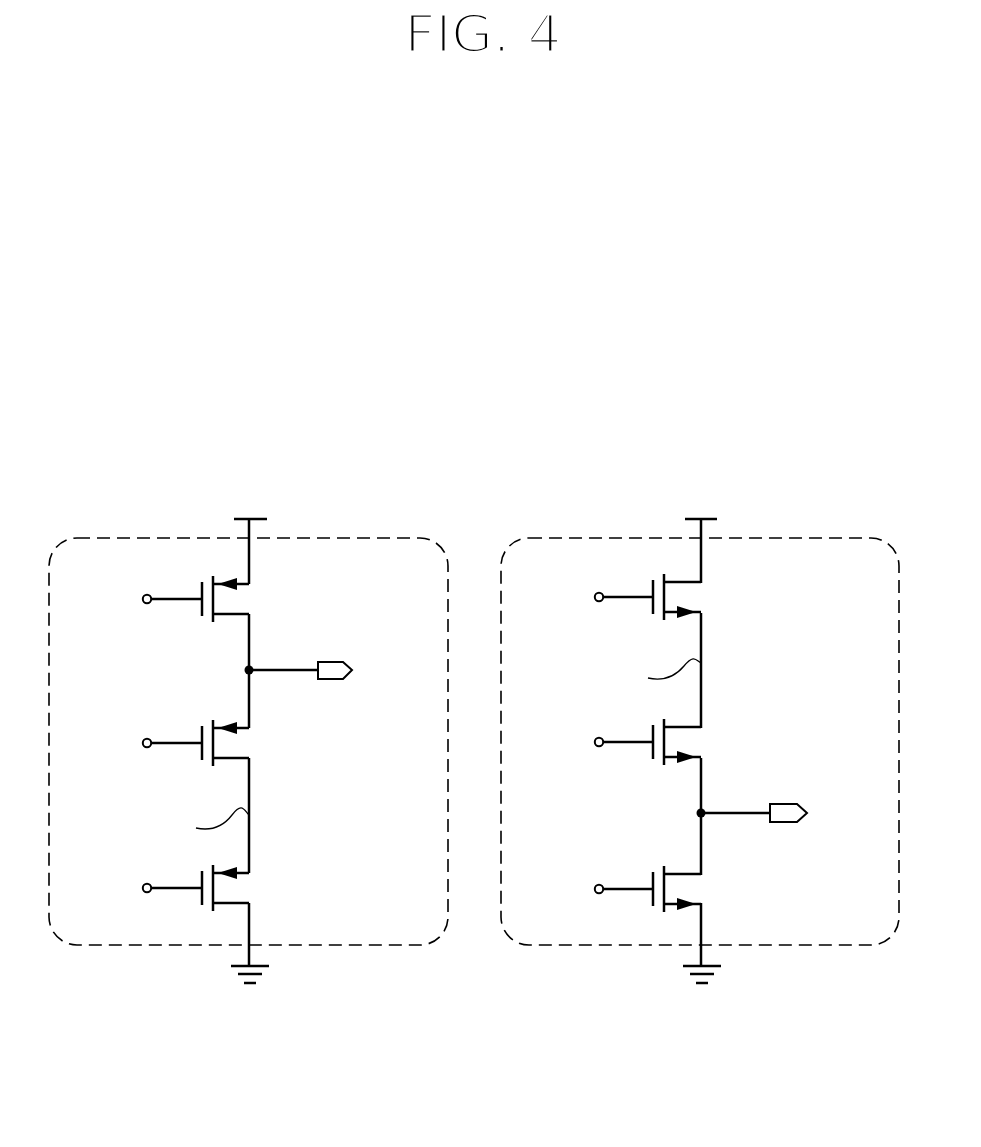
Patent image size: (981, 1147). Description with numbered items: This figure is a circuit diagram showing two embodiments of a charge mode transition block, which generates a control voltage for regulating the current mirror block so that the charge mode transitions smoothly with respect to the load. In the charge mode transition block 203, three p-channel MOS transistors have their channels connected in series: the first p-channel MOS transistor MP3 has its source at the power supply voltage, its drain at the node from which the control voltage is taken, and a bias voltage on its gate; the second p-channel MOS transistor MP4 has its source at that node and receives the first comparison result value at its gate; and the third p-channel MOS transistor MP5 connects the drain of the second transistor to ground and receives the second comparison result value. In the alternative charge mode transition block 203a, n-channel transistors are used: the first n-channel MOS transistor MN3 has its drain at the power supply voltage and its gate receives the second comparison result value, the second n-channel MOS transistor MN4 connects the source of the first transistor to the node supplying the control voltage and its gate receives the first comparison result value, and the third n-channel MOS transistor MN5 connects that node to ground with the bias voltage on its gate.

The charge mode transition block 203 is at (248, 720).
The charge mode transition block 203a is at (700, 720).
The first p-channel MOS transistor MP3 is at (224, 599).
The second p-channel MOS transistor MP4 is at (224, 743).
The third p-channel MOS transistor MP5 is at (224, 888).
The first n-channel MOS transistor MN3 is at (675, 597).
The second n-channel MOS transistor MN4 is at (675, 742).
The third n-channel MOS transistor MN5 is at (675, 889).